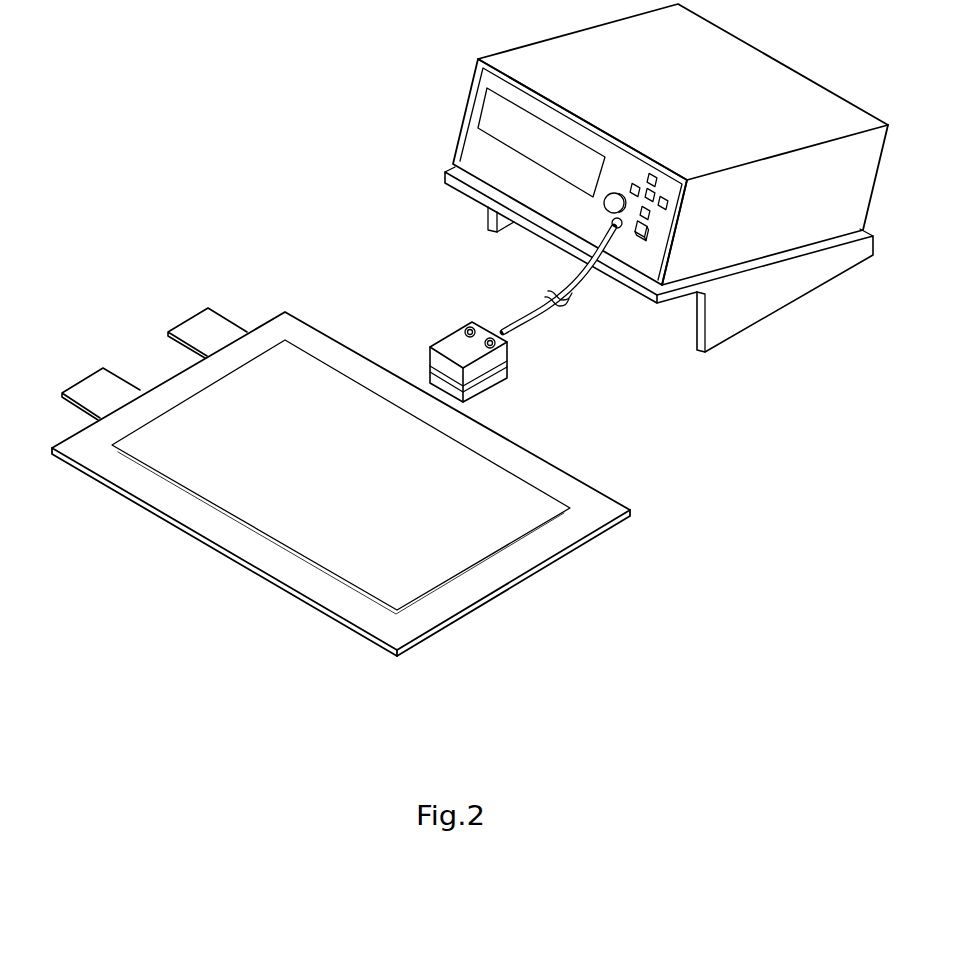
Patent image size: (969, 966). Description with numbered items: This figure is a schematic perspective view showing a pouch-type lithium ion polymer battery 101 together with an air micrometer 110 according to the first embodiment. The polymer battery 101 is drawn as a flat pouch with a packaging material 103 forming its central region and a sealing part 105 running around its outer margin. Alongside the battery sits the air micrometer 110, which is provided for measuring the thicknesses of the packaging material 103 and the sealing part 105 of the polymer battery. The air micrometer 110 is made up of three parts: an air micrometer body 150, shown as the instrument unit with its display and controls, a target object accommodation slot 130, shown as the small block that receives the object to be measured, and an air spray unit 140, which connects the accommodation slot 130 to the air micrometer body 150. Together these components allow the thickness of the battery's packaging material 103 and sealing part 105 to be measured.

The pouch-type lithium ion polymer battery 101 is at (336, 482).
The packaging material 103 is at (260, 507).
The sealing part 105 is at (302, 578).
The air micrometer 110 is at (692, 373).
The target object accommodation slot 130 is at (478, 378).
The air spray unit 140 is at (516, 325).
The air micrometer body 150 is at (472, 89).